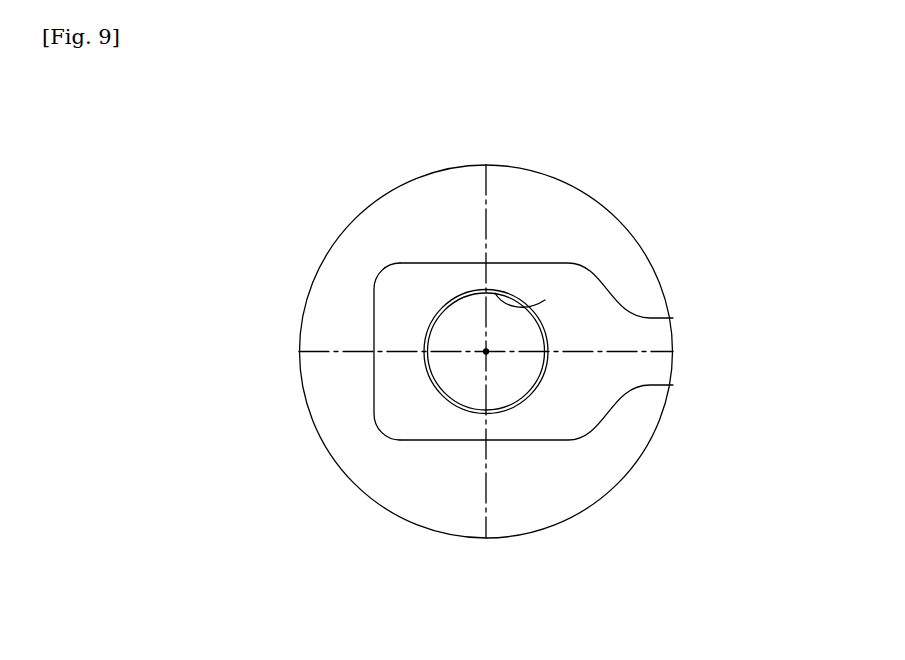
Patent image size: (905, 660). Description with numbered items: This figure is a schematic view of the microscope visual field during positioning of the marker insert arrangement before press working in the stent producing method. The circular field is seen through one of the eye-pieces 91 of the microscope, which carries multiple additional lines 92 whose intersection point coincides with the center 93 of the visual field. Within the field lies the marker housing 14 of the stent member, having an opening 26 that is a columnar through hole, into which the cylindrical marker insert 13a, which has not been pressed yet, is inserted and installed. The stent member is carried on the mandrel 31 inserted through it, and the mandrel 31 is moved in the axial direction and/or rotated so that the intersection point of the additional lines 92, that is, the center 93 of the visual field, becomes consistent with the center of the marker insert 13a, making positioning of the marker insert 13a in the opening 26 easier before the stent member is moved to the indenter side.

The additional lines 92 is at (486, 207).
The eye-piece 91 is at (602, 205).
The opening 26 is at (545, 300).
The center of the visual field 93 is at (486, 352).
The marker housing 14 is at (588, 393).
The marker insert which has not been pressed yet 13a is at (453, 373).
The mandrel 31 is at (570, 475).